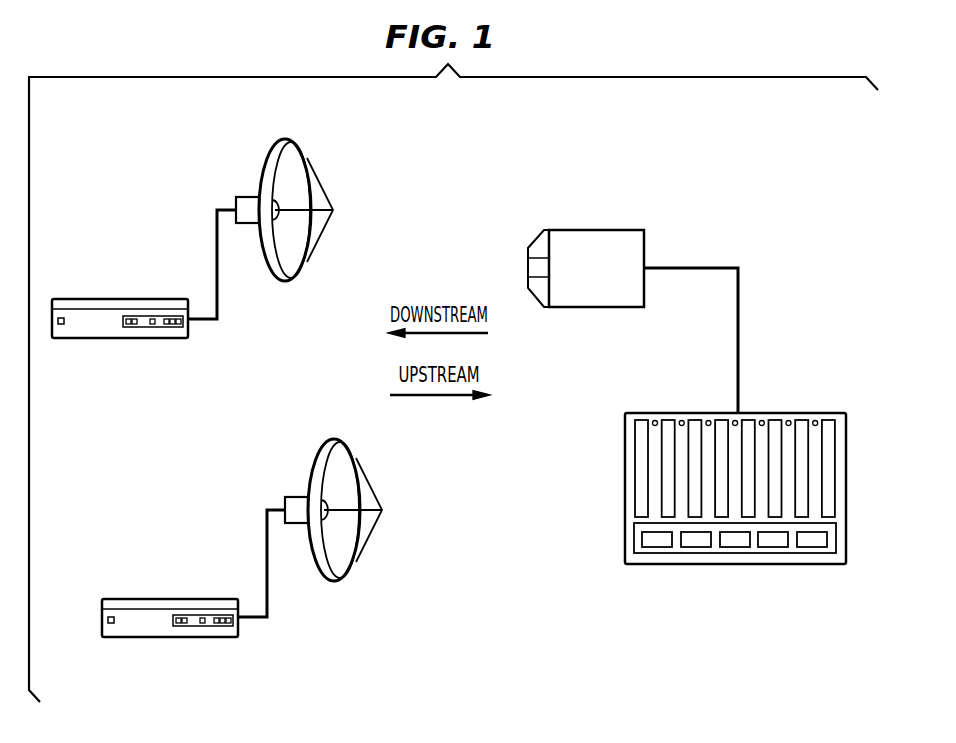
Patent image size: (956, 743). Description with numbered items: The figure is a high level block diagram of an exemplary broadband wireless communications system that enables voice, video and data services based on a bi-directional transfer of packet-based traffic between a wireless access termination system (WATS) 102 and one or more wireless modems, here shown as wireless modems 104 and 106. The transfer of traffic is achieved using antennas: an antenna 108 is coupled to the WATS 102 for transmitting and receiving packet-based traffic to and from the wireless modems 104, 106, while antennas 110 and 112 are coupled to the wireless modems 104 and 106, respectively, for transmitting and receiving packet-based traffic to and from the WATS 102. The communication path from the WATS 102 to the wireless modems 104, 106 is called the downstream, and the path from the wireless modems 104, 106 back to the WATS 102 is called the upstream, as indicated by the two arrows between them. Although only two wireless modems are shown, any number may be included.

The wireless access termination system (WATS) 102 is at (792, 413).
The wireless modem 104 is at (100, 299).
The wireless modem 106 is at (150, 599).
The antenna 108 is at (600, 230).
The antenna 110 is at (268, 155).
The antenna 112 is at (316, 460).